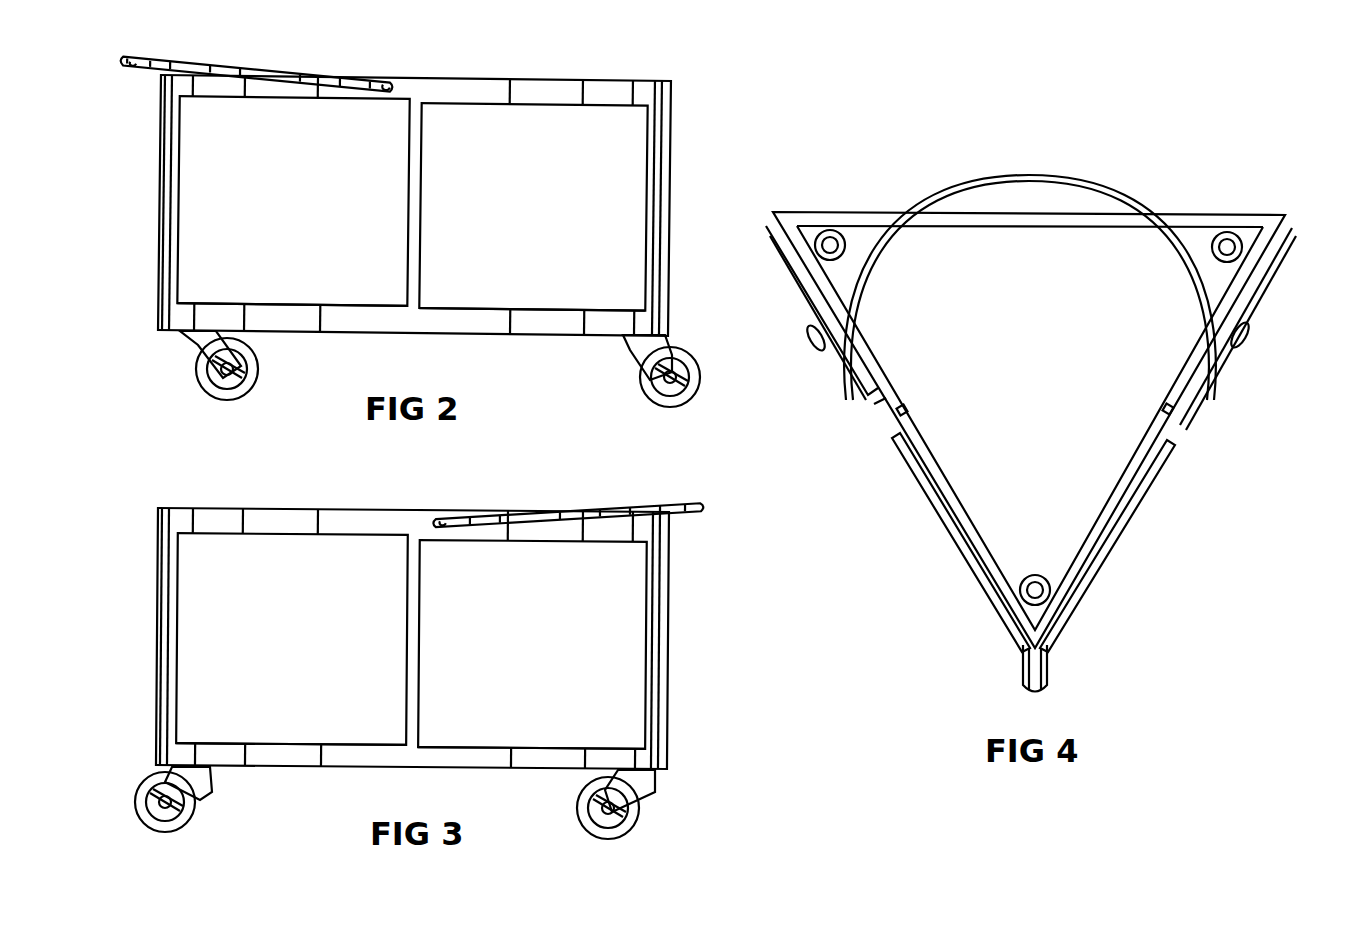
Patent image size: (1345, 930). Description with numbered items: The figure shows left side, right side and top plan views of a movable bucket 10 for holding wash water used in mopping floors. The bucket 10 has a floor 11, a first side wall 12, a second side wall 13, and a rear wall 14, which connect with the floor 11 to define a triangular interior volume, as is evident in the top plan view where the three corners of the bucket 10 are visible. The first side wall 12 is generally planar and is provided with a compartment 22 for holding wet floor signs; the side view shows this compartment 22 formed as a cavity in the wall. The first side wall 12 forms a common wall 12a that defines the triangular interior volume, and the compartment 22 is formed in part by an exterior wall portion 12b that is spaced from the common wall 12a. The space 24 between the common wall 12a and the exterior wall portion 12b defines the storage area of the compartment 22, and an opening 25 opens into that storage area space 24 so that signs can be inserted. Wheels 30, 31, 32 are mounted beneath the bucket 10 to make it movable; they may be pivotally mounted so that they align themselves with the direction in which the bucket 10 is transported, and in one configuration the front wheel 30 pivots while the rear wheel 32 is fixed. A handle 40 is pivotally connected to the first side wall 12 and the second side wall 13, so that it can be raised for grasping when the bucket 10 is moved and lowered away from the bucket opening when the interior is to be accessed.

In FIG. 2, the movable bucket 10 is at (706, 126).
In FIG. 3, the movable bucket 10 is at (701, 563).
In FIG. 4, the movable bucket 10 is at (1190, 495).
In FIG. 2, the floor 11 is at (346, 335).
In FIG. 3, the floor 11 is at (337, 768).
In FIG. 4, the floor 11 is at (1048, 393).
In FIG. 2, the first side wall 12 is at (478, 316).
In FIG. 4, the first side wall 12 is at (886, 452).
In FIG. 4, the common wall 12a is at (958, 500).
In FIG. 4, the exterior wall portion 12b is at (905, 505).
In FIG. 3, the second side wall 13 is at (465, 758).
In FIG. 4, the second side wall 13 is at (1135, 468).
In FIG. 2, the rear wall 14 is at (160, 230).
In FIG. 3, the rear wall 14 is at (672, 655).
In FIG. 4, the rear wall 14 is at (1183, 218).
In FIG. 2, the compartment 22 is at (310, 222).
In FIG. 3, the compartment 22 is at (300, 656).
In FIG. 4, the compartment 22 is at (805, 330).
In FIG. 4, the space 24 is at (800, 278).
In FIG. 4, the opening 25 is at (880, 352).
In FIG. 2, the front wheel 30 is at (645, 395).
In FIG. 3, the front wheel 30 is at (180, 837).
In FIG. 4, the front wheel 30 is at (1018, 683).
In FIG. 2, the wheel 31 is at (242, 392).
In FIG. 4, the wheel 31 is at (812, 375).
In FIG. 3, the rear wheel 32 is at (620, 832).
In FIG. 4, the rear wheel 32 is at (1237, 338).
In FIG. 2, the handle 40 is at (290, 80).
In FIG. 3, the handle 40 is at (632, 500).
In FIG. 4, the handle 40 is at (1063, 178).